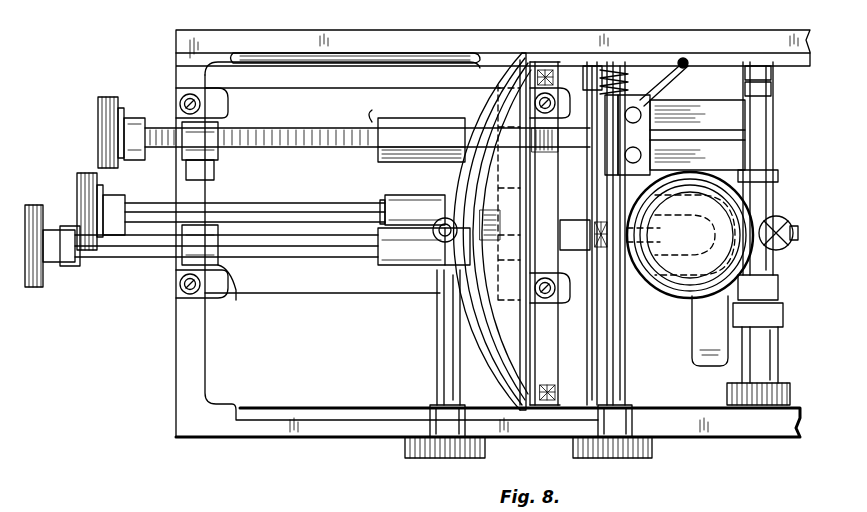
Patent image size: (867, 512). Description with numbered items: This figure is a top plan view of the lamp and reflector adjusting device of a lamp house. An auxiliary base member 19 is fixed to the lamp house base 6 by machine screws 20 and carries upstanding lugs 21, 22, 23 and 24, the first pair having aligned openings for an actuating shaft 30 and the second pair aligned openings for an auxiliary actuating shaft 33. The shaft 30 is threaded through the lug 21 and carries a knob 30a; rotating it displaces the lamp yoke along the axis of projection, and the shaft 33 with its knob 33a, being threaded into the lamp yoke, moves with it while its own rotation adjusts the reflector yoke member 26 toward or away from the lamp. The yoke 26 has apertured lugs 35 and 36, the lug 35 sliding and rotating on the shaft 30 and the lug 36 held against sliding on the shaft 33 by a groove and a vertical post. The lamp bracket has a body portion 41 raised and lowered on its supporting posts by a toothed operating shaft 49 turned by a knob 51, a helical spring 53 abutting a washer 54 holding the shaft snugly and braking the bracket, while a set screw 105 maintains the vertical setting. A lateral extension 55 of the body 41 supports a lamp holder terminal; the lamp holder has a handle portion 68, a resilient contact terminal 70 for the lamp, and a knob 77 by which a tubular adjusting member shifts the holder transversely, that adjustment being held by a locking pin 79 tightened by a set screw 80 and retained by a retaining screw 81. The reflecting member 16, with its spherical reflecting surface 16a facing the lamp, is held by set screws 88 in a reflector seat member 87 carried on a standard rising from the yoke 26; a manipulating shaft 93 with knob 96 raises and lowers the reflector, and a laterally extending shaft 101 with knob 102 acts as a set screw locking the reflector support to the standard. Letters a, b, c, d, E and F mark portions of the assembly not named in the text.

The base 6 is at (312, 438).
The reflecting member 16 is at (462, 322).
The spherical reflecting surface 16a is at (594, 355).
The auxiliary base member 19 is at (300, 300).
The machine screws 20 is at (182, 103).
The upstanding lug 21 is at (216, 122).
The upstanding lug 22 is at (548, 68).
The upstanding lug 23 is at (232, 268).
The upstanding lug 24 is at (562, 300).
The reflector yoke member 26 is at (388, 200).
The actuating shaft 30 is at (590, 200).
The knob 30a is at (108, 97).
The auxiliary actuating shaft 33 is at (572, 262).
The knob 33a is at (45, 282).
The apertured lug 35 is at (380, 122).
The apertured lug 36 is at (382, 266).
The body portion 41 is at (662, 94).
The operating shaft 49 is at (627, 330).
The knob 51 is at (636, 458).
The helical spring 53 is at (632, 100).
The washer 54 is at (608, 49).
The lateral extension 55 is at (690, 100).
The handle portion 68 is at (700, 366).
The resilient contact terminal 70 is at (668, 266).
The knob 77 is at (800, 382).
The locking pin 79 is at (778, 278).
The set screw 80 is at (788, 242).
The retaining screw 81 is at (796, 226).
The reflector seat member 87 is at (518, 412).
The set screws 88 is at (596, 228).
The manipulating shaft 93 is at (138, 206).
The knob 96 is at (90, 258).
The laterally extending shaft 101 is at (437, 382).
The knob 102 is at (430, 458).
The set screw 105 is at (686, 60).
The shaft a is at (296, 258).
The shaft b is at (306, 135).
The shaft c is at (296, 210).
The post d is at (437, 358).
The post E is at (646, 366).
The column F is at (779, 352).